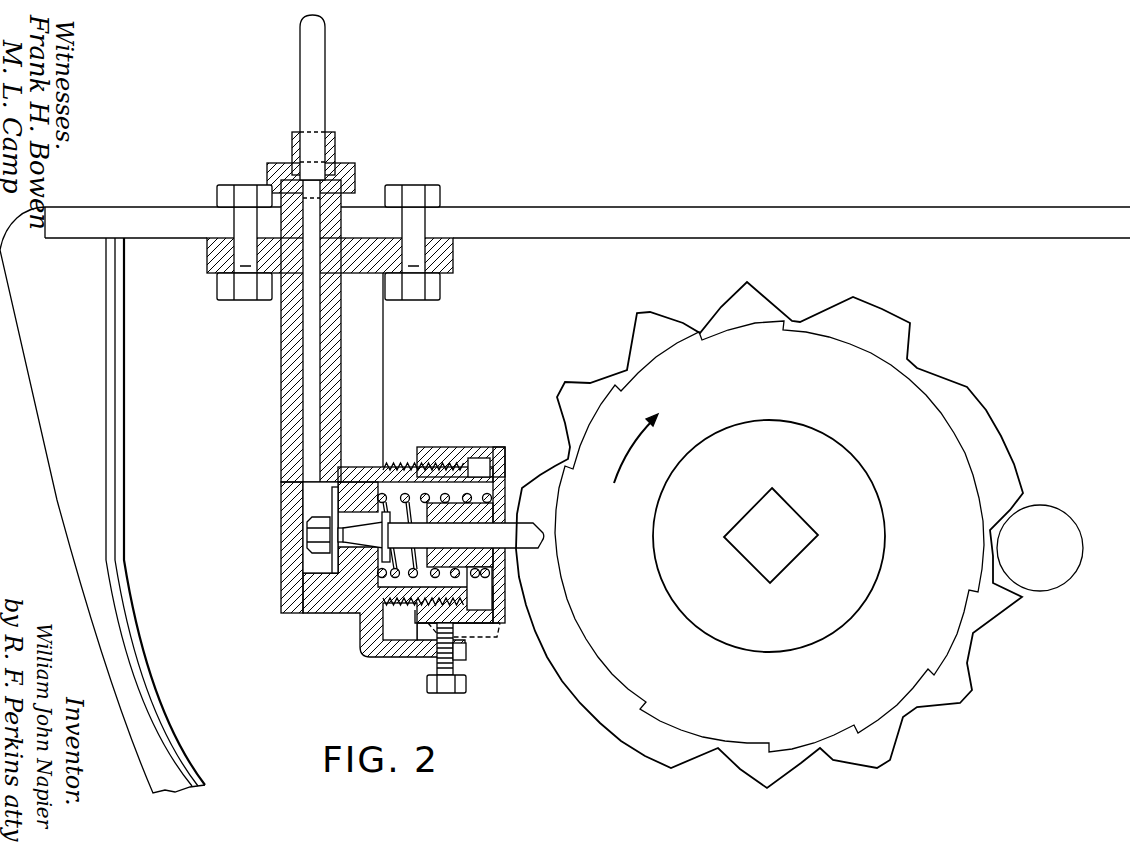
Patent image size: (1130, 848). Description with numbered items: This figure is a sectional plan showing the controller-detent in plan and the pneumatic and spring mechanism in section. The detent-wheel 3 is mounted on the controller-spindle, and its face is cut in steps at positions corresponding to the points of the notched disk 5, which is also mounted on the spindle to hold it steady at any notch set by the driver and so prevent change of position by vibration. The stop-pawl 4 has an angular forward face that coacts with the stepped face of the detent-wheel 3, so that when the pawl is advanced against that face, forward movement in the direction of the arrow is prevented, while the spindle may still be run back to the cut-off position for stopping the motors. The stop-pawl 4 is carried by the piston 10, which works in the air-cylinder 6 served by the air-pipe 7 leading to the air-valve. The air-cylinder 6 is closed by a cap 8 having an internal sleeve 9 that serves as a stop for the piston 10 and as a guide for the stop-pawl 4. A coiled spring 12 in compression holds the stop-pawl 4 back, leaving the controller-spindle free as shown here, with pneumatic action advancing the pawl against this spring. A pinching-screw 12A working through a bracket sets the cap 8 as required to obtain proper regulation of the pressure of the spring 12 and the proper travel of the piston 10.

The detent-wheel 3 is at (772, 745).
The stop-pawl 4 is at (441, 537).
The notched disk 5 is at (610, 703).
The air-cylinder 6 is at (342, 477).
The air-pipe 7 is at (312, 342).
The cap 8 is at (475, 467).
The internal sleeve 9 is at (490, 461).
The piston 10 is at (383, 463).
The coiled spring 12 is at (428, 490).
The pinching-screw 12A is at (455, 663).